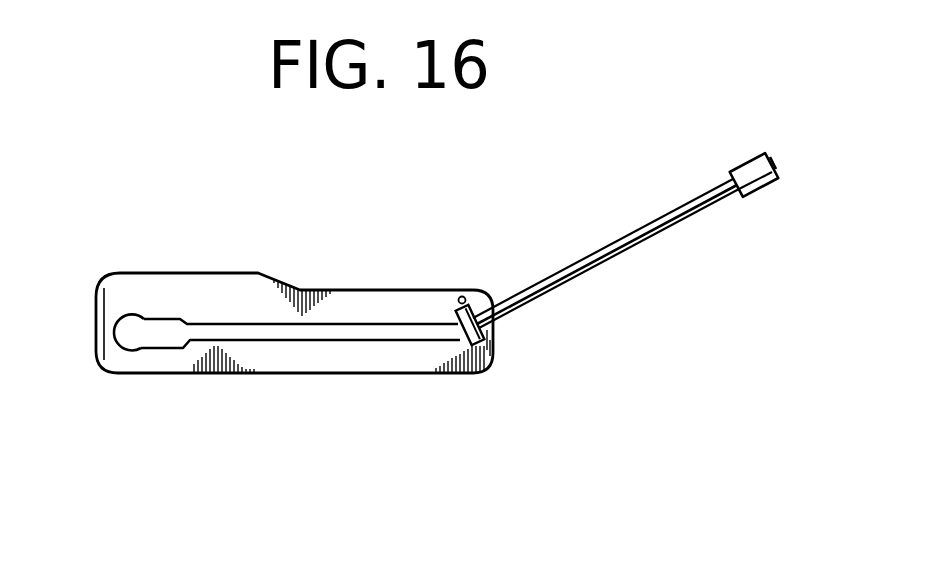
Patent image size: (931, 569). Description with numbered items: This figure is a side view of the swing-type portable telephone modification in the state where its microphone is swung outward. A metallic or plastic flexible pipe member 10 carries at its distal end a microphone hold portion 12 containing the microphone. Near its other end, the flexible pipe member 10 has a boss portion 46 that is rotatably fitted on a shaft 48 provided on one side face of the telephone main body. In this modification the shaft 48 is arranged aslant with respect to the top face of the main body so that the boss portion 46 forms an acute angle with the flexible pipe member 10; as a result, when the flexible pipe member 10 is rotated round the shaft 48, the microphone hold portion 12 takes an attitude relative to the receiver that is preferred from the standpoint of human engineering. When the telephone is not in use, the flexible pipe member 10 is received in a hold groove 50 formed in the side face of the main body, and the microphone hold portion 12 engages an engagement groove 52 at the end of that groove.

The flexible pipe member 10 is at (625, 247).
The microphone hold portion 12 is at (742, 168).
The boss portion 46 is at (483, 338).
The shaft 48 is at (461, 296).
The hold groove 50 is at (327, 330).
The engagement groove 52 is at (140, 340).